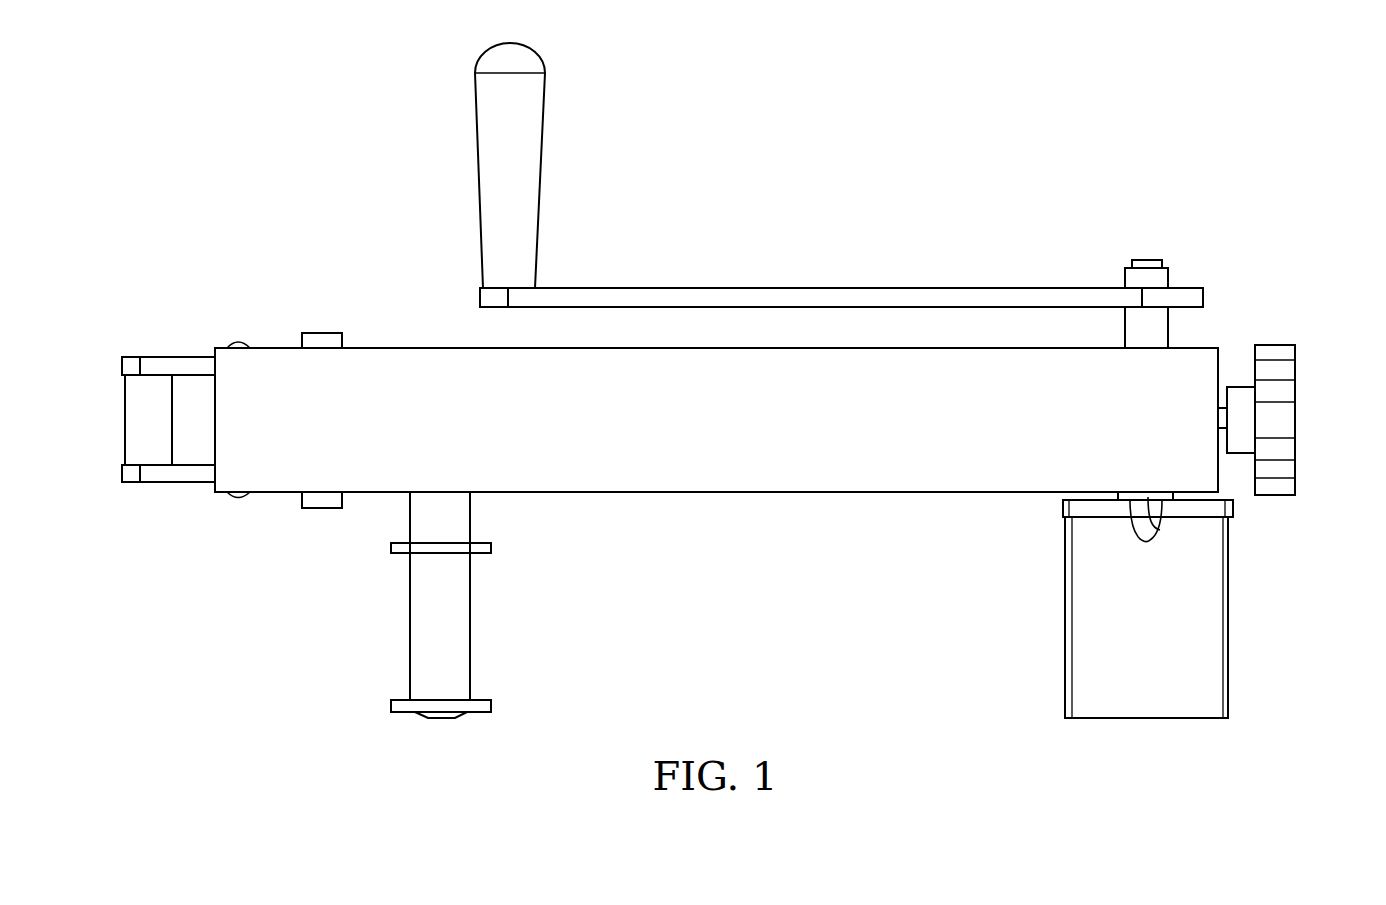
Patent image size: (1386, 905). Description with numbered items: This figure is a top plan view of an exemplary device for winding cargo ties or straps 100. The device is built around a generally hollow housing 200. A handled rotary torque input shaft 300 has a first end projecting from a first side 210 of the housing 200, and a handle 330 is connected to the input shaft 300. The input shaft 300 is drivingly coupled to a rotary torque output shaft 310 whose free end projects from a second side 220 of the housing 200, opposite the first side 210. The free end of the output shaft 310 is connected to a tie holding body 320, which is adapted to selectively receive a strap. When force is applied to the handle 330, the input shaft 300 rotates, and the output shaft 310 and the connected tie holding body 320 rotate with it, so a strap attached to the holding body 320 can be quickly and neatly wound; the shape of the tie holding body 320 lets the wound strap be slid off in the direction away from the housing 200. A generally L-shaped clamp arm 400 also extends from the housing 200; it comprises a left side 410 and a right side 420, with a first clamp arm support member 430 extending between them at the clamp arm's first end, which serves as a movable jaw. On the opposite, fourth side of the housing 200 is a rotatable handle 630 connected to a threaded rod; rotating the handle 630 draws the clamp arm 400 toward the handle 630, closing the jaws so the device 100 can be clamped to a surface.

The device for winding cargo ties/straps 100 is at (1284, 194).
The hollow housing 200 is at (765, 415).
The first side of the housing 210 is at (1197, 347).
The second side of the housing 220 is at (860, 492).
The rotary torque input shaft 300 is at (801, 195).
The rotary torque output shaft 310 is at (1160, 527).
The tie holding body 320 is at (1230, 675).
The handle 330 is at (477, 150).
The clamp arm 400 is at (132, 409).
The left side of the clamp arm 410 is at (160, 357).
The right side of the clamp arm 420 is at (160, 482).
The first clamp arm support member 430 is at (125, 420).
The rotatable handle 630 is at (1285, 417).